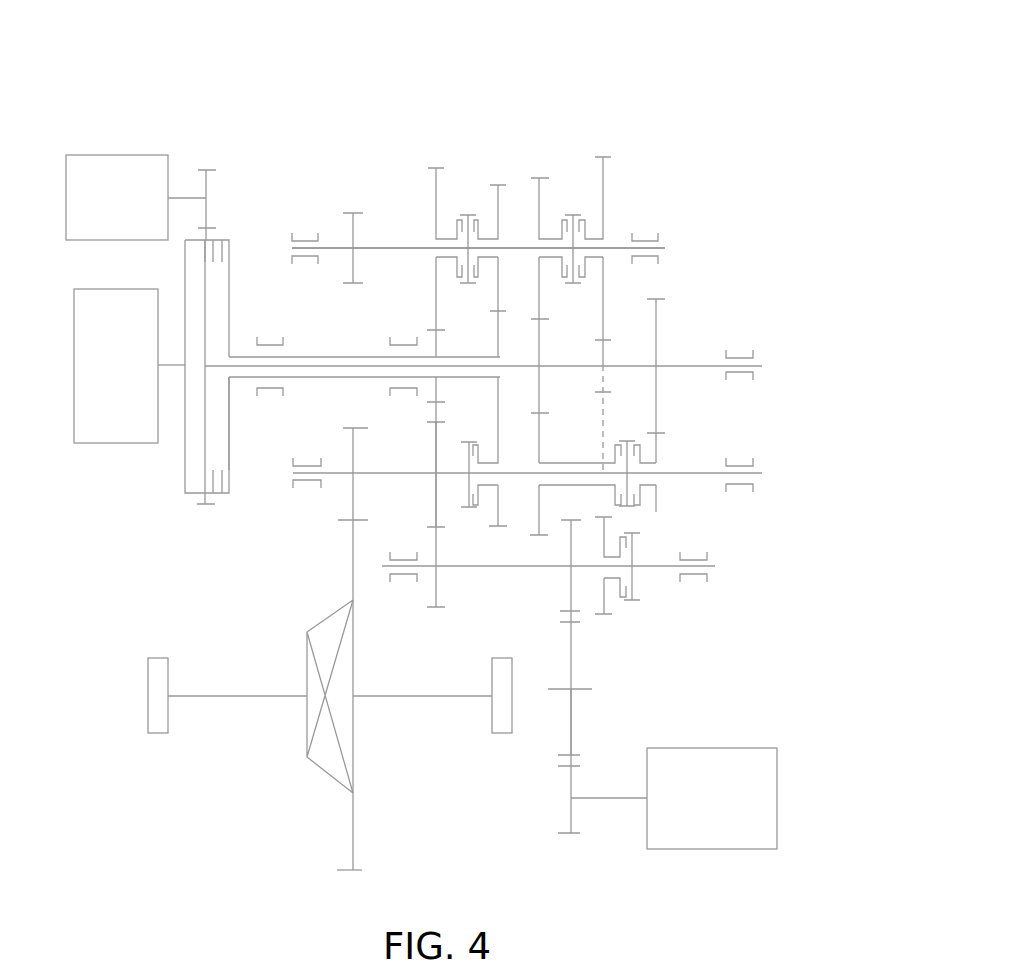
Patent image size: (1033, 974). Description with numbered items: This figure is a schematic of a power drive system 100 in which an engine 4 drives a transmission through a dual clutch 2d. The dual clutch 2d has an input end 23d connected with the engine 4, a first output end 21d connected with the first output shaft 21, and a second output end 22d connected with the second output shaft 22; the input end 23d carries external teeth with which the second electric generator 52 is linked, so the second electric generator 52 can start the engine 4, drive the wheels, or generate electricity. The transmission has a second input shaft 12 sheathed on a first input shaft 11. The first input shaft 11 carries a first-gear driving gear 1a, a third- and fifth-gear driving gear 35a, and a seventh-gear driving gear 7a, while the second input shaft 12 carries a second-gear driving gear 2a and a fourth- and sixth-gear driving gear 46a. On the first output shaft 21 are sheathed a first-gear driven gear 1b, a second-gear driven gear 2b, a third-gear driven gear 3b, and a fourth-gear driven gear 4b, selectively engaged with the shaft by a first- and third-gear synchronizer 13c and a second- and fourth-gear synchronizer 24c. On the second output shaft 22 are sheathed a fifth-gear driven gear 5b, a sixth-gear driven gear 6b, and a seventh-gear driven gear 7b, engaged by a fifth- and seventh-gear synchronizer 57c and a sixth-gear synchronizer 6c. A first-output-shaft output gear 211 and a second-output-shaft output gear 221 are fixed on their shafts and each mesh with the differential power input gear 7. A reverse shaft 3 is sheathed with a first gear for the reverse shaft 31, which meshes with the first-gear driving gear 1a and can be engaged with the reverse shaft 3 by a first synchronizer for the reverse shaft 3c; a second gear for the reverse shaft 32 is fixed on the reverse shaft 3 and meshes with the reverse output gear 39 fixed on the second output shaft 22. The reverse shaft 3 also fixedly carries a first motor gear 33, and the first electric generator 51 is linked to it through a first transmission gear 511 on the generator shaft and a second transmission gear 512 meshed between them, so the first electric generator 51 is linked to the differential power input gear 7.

The power drive system 100 is at (447, 120).
The second electric generator 52 is at (108, 185).
The engine 4 is at (90, 312).
The dual clutch 2d is at (73, 468).
The input end 23d is at (185, 424).
The first output end 21d is at (205, 443).
The second output end 22d is at (228, 456).
The first output shaft 21 is at (665, 248).
The first-output-shaft output gear 211 is at (353, 213).
The second-gear driven gear 2b is at (436, 168).
The fourth-gear driven gear 4b is at (492, 185).
The second- and fourth-gear synchronizer 24c is at (466, 216).
The fourth- and sixth-gear driving gear 46a is at (498, 340).
The second-gear driving gear 2a is at (436, 357).
The third-gear driven gear 3b is at (540, 178).
The first-gear driven gear 1b is at (605, 157).
The first- and third-gear synchronizer 13c is at (575, 215).
The third- and fifth-gear driving gear 35a is at (540, 360).
The first-gear driving gear 1a is at (606, 357).
The second input shaft 12 is at (313, 357).
The first input shaft 11 is at (762, 366).
The seventh-gear driving gear 7a is at (657, 328).
The second output shaft 22 is at (762, 473).
The second-output-shaft output gear 221 is at (353, 428).
The reverse output gear 39 is at (436, 462).
The sixth-gear driven gear 6b is at (497, 448).
The sixth-gear synchronizer 6c is at (470, 507).
The fifth-gear driven gear 5b is at (542, 460).
The fifth- and seventh-gear synchronizer 57c is at (630, 508).
The seventh-gear driven gear 7b is at (658, 462).
The reverse shaft 3 is at (715, 566).
The second gear for the reverse shaft 32 is at (438, 607).
The first motor gear 33 is at (570, 600).
The first gear for the reverse shaft 31 is at (604, 600).
The first synchronizer for the reverse shaft 3c is at (635, 600).
The second transmission gear 512 is at (568, 713).
The first transmission gear 511 is at (570, 808).
The first electric generator 51 is at (740, 800).
The differential power input gear 7 is at (358, 870).